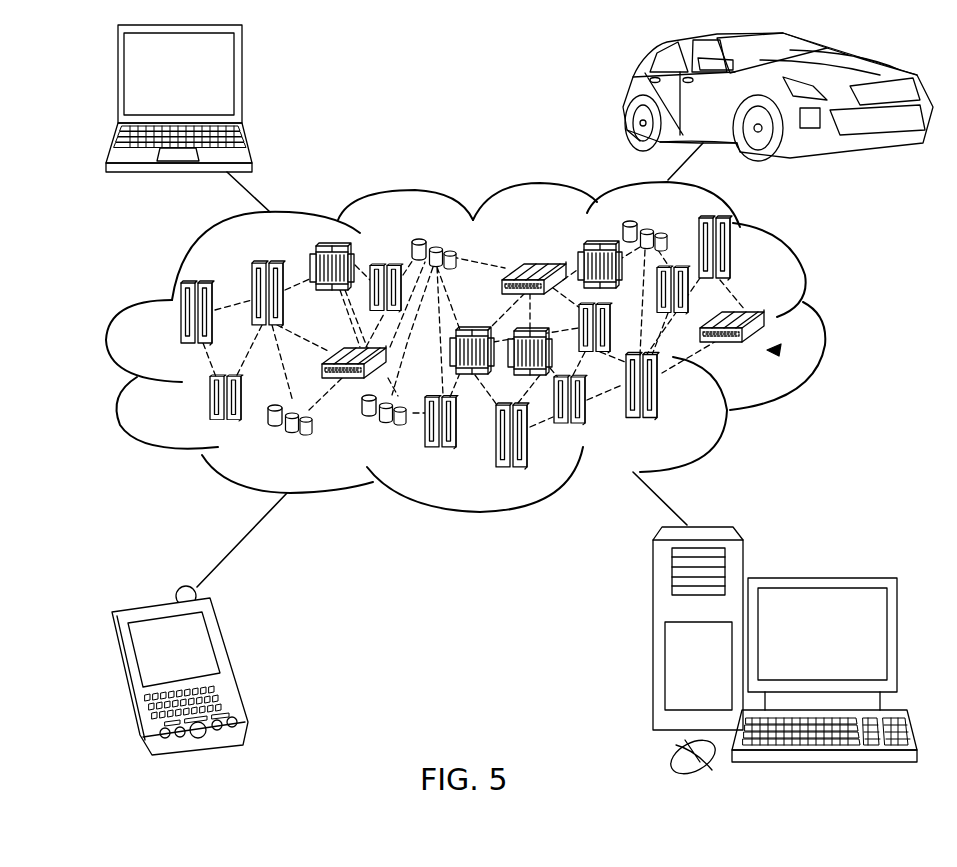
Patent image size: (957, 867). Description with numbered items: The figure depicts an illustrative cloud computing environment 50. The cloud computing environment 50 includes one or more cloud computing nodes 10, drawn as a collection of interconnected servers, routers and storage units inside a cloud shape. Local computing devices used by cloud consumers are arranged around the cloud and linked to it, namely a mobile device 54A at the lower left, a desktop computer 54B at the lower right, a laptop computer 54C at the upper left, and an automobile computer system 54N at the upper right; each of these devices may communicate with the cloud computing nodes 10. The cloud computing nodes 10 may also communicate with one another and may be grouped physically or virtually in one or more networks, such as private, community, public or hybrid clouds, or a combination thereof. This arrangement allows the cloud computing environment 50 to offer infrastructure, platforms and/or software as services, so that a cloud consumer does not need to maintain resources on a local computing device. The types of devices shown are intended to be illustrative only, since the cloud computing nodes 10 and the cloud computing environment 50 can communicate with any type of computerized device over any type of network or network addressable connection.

The cloud computing nodes 10 is at (778, 351).
The cloud computing environment 50 is at (820, 322).
The mobile device 54A is at (233, 660).
The desktop computer 54B is at (820, 578).
The laptop computer 54C is at (241, 82).
The automobile computer system 54N is at (626, 94).